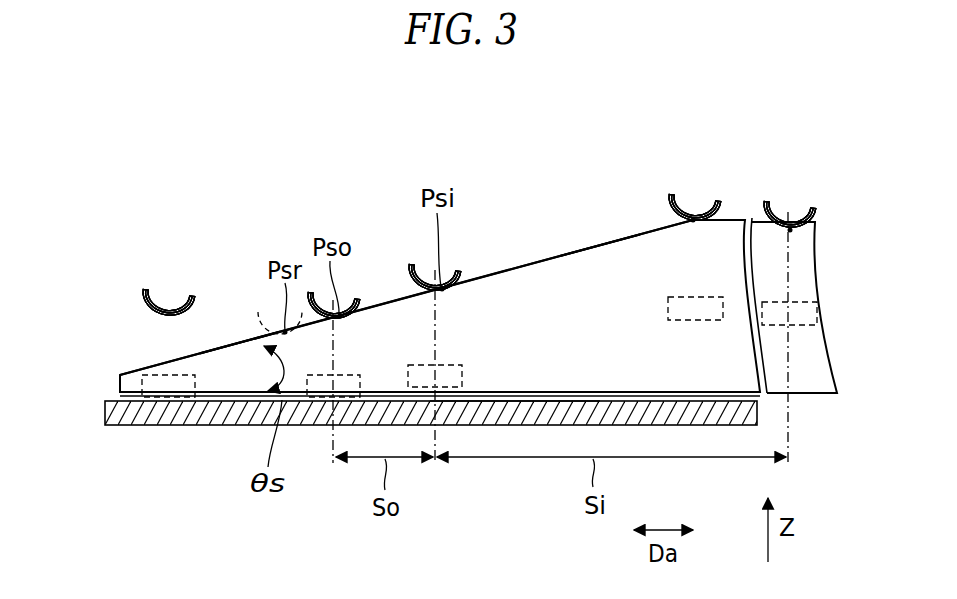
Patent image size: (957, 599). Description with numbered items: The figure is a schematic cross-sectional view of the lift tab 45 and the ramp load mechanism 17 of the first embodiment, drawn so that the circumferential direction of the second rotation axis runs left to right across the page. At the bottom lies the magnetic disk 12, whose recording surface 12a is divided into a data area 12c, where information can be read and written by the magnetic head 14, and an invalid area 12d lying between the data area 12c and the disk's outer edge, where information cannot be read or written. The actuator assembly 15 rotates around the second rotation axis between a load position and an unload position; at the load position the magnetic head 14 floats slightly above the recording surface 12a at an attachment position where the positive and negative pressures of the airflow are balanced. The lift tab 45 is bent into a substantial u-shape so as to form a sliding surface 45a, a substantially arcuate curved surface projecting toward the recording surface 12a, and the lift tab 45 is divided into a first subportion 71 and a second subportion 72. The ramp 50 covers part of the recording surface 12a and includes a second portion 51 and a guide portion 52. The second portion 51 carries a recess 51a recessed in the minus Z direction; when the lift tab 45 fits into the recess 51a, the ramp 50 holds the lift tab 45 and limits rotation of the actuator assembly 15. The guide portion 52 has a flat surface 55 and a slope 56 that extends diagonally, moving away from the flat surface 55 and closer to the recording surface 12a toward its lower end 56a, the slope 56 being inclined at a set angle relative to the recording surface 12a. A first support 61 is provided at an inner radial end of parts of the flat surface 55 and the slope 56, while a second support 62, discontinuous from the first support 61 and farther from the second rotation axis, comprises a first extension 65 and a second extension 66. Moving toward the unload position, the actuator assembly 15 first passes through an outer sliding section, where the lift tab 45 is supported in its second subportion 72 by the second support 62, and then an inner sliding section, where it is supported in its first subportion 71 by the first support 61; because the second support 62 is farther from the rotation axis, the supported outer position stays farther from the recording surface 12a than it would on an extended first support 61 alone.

The magnetic disk 12 is at (237, 418).
The recording surface 12a is at (440, 255).
The data area 12c is at (227, 392).
The invalid area 12d is at (508, 400).
The magnetic head 14 is at (150, 372).
The actuator assembly 15 is at (140, 290).
The ramp load mechanism 17 is at (814, 432).
The lift tab 45 is at (255, 312).
The sliding surface 45a is at (170, 319).
The ramp 50 is at (818, 397).
The second portion 51 is at (805, 240).
The recess 51a is at (814, 222).
The guide portion 52 is at (592, 257).
The flat surface 55 is at (732, 218).
The slope 56 is at (556, 257).
The end of the slope 56a is at (120, 375).
The first support 61 is at (600, 246).
The second support 62 is at (240, 253).
The first extension 65 is at (238, 343).
The second extension 66 is at (408, 266).
The first subportion 71 is at (458, 270).
The second subportion 72 is at (193, 298).